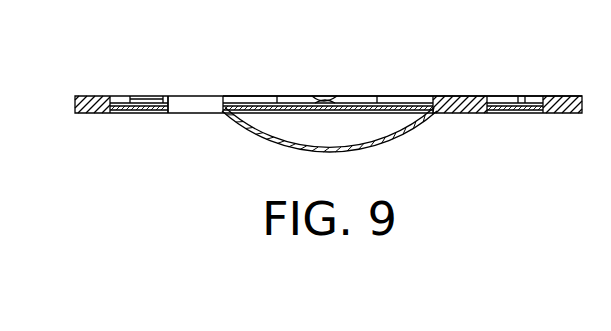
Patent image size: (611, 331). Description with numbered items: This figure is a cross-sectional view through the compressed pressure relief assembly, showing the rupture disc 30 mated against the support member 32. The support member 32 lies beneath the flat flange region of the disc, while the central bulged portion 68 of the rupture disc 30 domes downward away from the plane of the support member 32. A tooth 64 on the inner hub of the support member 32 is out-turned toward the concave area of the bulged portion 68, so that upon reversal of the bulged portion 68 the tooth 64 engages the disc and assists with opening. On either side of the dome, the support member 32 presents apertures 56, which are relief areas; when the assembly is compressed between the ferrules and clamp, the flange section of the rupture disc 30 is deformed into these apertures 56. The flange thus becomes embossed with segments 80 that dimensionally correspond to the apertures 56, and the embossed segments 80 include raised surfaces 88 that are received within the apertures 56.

The rupture disc 30 is at (560, 113).
The support member 32 is at (92, 97).
The apertures 56 is at (142, 97).
The tooth 64 is at (320, 97).
The bulged portion 68 is at (402, 138).
The embossed segments 80 is at (168, 113).
The raised surfaces 88 is at (515, 113).